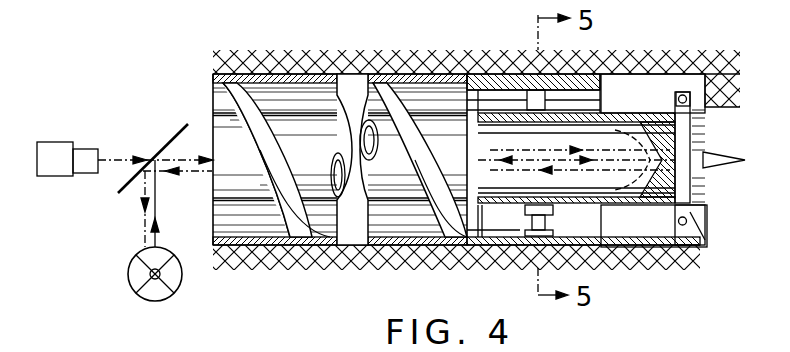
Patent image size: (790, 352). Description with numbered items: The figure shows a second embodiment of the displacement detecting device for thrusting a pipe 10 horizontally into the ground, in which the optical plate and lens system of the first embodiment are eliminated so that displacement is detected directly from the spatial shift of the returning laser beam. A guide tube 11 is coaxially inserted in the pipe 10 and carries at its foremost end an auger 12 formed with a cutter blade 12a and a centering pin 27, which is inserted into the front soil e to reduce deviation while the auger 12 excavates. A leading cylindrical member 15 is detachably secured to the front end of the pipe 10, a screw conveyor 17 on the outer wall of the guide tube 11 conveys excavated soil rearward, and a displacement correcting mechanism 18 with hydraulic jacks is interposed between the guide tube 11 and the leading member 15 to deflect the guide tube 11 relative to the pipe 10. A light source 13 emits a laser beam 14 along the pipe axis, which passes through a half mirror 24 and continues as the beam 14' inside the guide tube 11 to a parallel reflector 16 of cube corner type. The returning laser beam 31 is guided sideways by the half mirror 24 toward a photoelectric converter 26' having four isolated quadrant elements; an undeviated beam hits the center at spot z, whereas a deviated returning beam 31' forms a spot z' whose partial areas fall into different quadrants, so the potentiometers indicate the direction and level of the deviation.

The pipe 10 is at (290, 72).
The guide tube 11 is at (503, 218).
The auger 12 is at (676, 114).
The cutter blade 12a is at (706, 82).
The light source 13 is at (60, 150).
The laser beam 14 is at (155, 148).
The laser beam (inside guide tube) 14' is at (555, 156).
The leading cylindrical member 15 is at (510, 75).
The parallel reflector (cube corner) 16 is at (640, 130).
The screw conveyor 17 is at (450, 242).
The displacement correcting mechanism 18 is at (519, 220).
The half mirror 24 is at (168, 138).
The photoelectric converter 26' is at (189, 275).
The centering pin 27 is at (714, 168).
The returning laser beam 31 is at (177, 203).
The deviated returning light beam 31' is at (125, 209).
The front earth (soil) e is at (680, 93).
The center spot z is at (153, 318).
The deviated spot z' is at (112, 257).